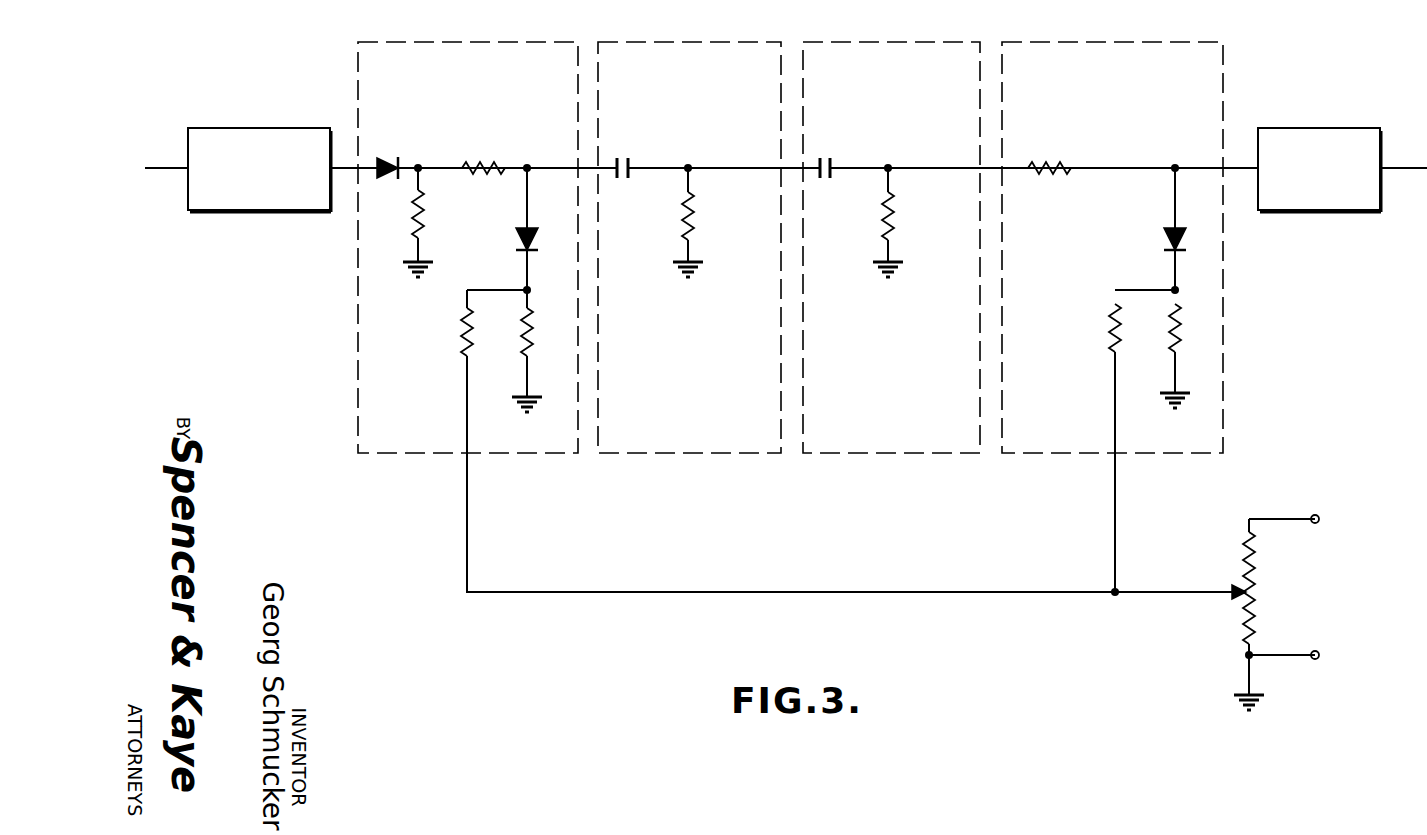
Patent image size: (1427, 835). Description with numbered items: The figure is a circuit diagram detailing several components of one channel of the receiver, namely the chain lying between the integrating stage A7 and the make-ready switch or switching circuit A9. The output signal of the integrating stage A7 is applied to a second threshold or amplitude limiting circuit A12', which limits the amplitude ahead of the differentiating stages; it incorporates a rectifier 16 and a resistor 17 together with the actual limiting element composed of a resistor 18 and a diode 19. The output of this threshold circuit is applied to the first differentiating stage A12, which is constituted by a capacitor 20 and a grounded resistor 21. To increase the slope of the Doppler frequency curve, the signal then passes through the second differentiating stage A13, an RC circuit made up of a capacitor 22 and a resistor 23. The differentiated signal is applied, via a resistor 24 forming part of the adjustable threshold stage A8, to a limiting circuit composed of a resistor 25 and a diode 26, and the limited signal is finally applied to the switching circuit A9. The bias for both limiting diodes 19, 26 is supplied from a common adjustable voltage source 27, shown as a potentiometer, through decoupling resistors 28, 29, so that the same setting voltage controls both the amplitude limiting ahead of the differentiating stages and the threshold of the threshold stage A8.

The integrating stage A7 is at (298, 133).
The second threshold or amplitude limiting circuit A12' is at (481, 53).
The first differentiating stage A12 is at (689, 53).
The second differentiating stage A13 is at (899, 48).
The adjustable threshold stage A8 is at (1131, 48).
The switching circuit A9 is at (1307, 133).
The rectifier 16 is at (385, 164).
The resistor 17 is at (486, 163).
The resistor 18 is at (524, 331).
The diode 19 is at (514, 234).
The capacitor 20 is at (624, 160).
The grounded resistor 21 is at (696, 222).
The capacitor 22 is at (827, 160).
The resistor 23 is at (903, 222).
The resistor 24 is at (1052, 163).
The resistor 25 is at (1181, 338).
The diode 26 is at (1165, 235).
The common adjustable voltage source 27 is at (1262, 599).
The decoupling resistor 28 is at (463, 331).
The decoupling resistor 29 is at (1108, 330).